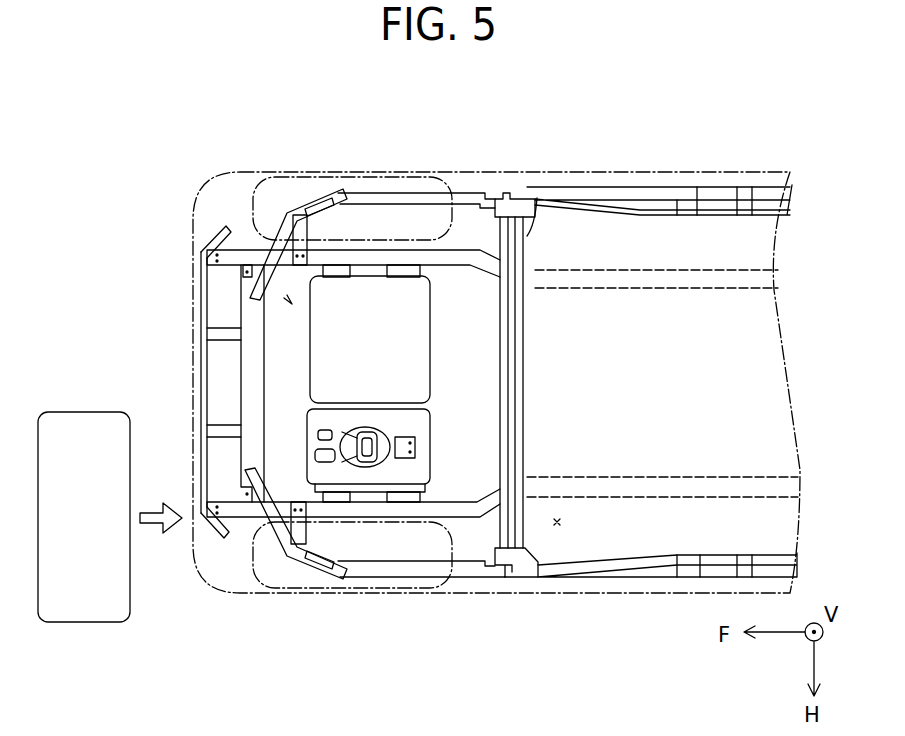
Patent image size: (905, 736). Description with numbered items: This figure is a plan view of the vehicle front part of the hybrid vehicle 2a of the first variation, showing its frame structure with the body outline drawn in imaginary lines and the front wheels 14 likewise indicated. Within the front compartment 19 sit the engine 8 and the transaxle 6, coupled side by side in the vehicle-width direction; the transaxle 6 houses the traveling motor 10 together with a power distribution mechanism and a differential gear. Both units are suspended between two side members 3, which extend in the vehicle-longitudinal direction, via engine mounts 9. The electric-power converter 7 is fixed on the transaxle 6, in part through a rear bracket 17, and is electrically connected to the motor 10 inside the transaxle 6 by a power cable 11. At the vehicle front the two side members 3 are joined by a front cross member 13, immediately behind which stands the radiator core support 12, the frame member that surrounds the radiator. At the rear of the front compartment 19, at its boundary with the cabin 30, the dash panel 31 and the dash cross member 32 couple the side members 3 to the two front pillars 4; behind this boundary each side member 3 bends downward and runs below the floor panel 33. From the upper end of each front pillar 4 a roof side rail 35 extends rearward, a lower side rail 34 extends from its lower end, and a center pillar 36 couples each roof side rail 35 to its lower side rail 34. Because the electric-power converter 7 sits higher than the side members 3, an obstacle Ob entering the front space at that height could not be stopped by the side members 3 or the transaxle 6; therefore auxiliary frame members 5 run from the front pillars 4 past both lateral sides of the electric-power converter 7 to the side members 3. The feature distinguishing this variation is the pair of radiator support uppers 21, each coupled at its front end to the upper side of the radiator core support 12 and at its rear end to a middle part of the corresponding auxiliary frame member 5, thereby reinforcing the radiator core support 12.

The hybrid vehicle 2a is at (163, 160).
The side member 3 is at (228, 250).
The front pillar 4 is at (515, 192).
The auxiliary frame member 5 is at (472, 190).
The transaxle 6 is at (424, 470).
The traveling motor 10 is at (365, 447).
The electric-power converter 7 is at (312, 442).
The engine 8 is at (417, 333).
The engine mount 9 is at (404, 263).
The power cable 11 is at (305, 532).
The radiator core support 12 is at (250, 316).
The front cross member 13 is at (205, 342).
The front wheel 14 is at (272, 186).
The rear bracket 17 is at (415, 448).
The front compartment 19 is at (290, 302).
The radiator support upper 21 is at (250, 262).
The cabin 30 is at (557, 527).
The dash panel 31 is at (548, 187).
The dash cross member 32 is at (527, 263).
The floor panel 33 is at (603, 535).
The lower side rail 34 is at (632, 187).
The roof side rail 35 is at (695, 187).
The center pillar 36 is at (745, 187).
The obstacle Ob is at (72, 412).